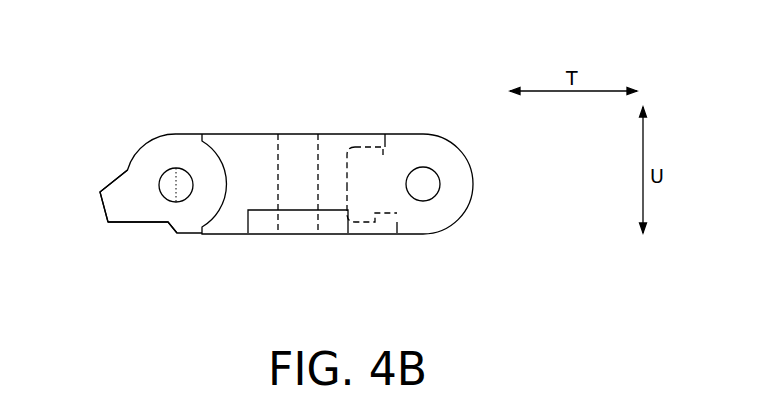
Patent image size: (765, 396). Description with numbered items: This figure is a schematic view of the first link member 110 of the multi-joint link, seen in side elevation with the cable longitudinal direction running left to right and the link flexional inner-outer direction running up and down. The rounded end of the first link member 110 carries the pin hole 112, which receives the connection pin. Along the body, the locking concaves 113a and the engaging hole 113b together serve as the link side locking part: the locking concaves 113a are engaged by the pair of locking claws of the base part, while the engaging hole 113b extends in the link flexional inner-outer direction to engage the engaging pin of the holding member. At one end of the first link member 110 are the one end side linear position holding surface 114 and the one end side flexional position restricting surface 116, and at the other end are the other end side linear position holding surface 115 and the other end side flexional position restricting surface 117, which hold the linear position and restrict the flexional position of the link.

The first link member 110 is at (104, 91).
The pin hole 112 is at (428, 198).
The locking concaves 113a is at (333, 218).
The engaging hole 113b is at (318, 150).
The one end side linear position holding surface 114 is at (128, 223).
The other end side linear position holding surface 115 is at (397, 213).
The one end side flexional position restricting surface 116 is at (107, 186).
The other end side flexional position restricting surface 117 is at (380, 156).